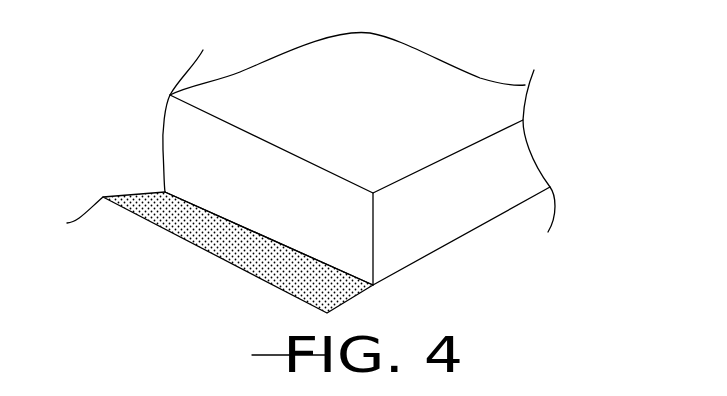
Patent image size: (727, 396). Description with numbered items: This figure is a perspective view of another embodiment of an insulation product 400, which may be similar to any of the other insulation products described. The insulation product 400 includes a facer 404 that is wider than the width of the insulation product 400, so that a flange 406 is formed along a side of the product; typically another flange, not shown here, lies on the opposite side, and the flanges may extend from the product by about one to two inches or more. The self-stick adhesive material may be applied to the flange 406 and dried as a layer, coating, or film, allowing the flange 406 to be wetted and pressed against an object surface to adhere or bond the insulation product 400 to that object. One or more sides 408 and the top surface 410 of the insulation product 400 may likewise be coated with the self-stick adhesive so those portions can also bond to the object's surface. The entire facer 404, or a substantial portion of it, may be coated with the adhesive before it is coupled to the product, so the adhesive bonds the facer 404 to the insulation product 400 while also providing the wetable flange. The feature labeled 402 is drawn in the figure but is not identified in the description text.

The insulation product 400 is at (353, 175).
The side surface 402 is at (505, 170).
The facer 404 is at (450, 268).
The flange 406 is at (203, 246).
The side 408 is at (186, 155).
The top surface 410 is at (393, 112).